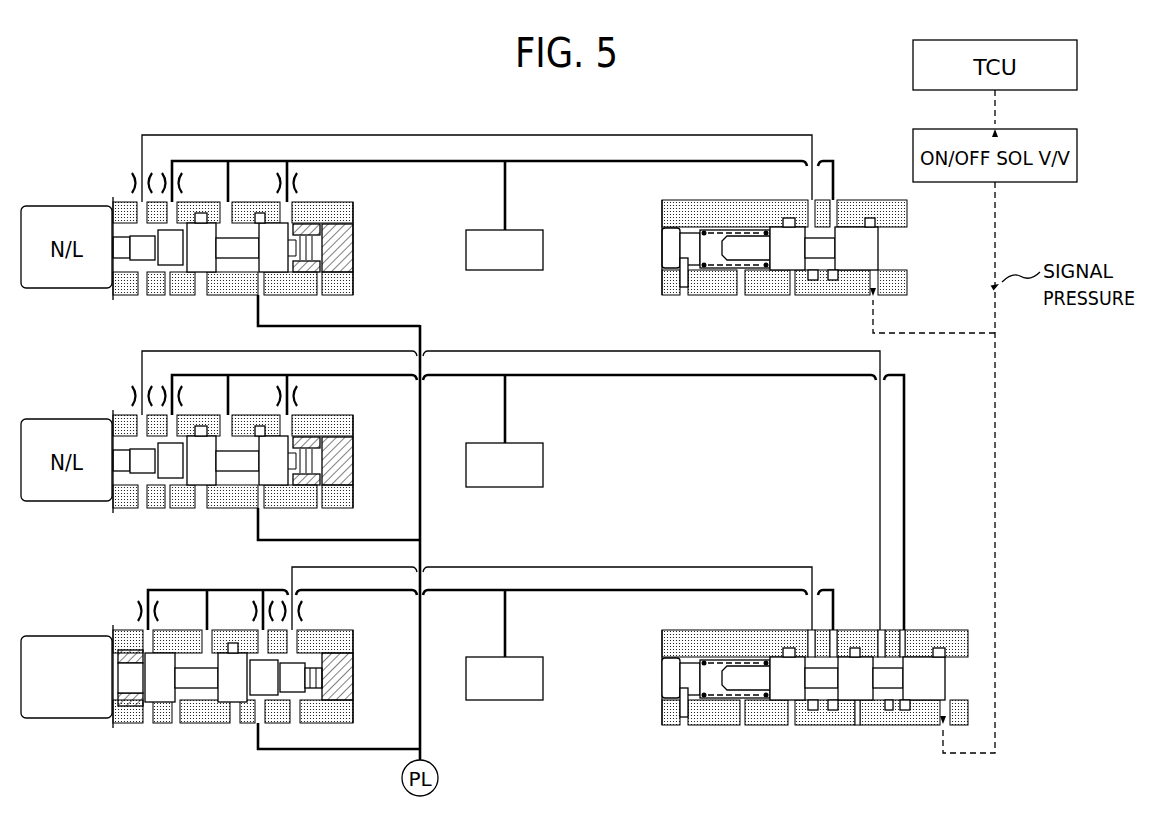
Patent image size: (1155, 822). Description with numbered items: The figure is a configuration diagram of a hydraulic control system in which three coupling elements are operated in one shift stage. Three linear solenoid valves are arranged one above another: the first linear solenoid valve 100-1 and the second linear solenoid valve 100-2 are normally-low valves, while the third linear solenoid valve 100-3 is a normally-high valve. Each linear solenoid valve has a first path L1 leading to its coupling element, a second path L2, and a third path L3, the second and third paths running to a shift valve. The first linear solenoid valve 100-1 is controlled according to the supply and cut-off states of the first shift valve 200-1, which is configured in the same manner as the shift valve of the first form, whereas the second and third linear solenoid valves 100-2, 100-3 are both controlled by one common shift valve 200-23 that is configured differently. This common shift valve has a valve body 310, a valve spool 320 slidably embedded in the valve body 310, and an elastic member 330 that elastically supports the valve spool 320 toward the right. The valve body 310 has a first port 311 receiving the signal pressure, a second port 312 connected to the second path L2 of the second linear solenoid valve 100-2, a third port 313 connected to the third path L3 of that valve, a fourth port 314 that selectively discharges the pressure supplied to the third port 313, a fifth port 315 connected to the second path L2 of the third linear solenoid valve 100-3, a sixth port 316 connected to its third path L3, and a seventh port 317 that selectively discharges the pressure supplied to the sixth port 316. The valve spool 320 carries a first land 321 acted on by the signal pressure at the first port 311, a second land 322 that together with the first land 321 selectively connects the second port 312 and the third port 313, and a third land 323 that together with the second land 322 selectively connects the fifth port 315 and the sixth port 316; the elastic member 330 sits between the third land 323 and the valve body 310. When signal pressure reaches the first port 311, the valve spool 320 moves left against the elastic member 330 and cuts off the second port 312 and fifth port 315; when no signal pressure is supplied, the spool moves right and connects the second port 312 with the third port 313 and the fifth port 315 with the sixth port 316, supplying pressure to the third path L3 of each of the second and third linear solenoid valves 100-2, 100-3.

The first linear solenoid valve 100-1 is at (128, 298).
The second linear solenoid valve 100-2 is at (128, 511).
The third linear solenoid valve 100-3 is at (128, 726).
The first shift valve 200-1 is at (705, 298).
The common shift valve 200-23 is at (796, 678).
The valve body 310 is at (958, 638).
The first port 311 is at (945, 708).
The second port 312 is at (905, 632).
The third port 313 is at (877, 630).
The fourth port 314 is at (860, 712).
The fifth port 315 is at (837, 632).
The sixth port 316 is at (812, 633).
The seventh port 317 is at (788, 713).
The valve spool 320 is at (813, 692).
The first land 321 is at (925, 690).
The second land 322 is at (845, 692).
The third land 323 is at (775, 677).
The elastic member 330 is at (716, 658).
The first path L1 is at (502, 172).
The second path L2 is at (595, 163).
The third path L3 is at (597, 135).